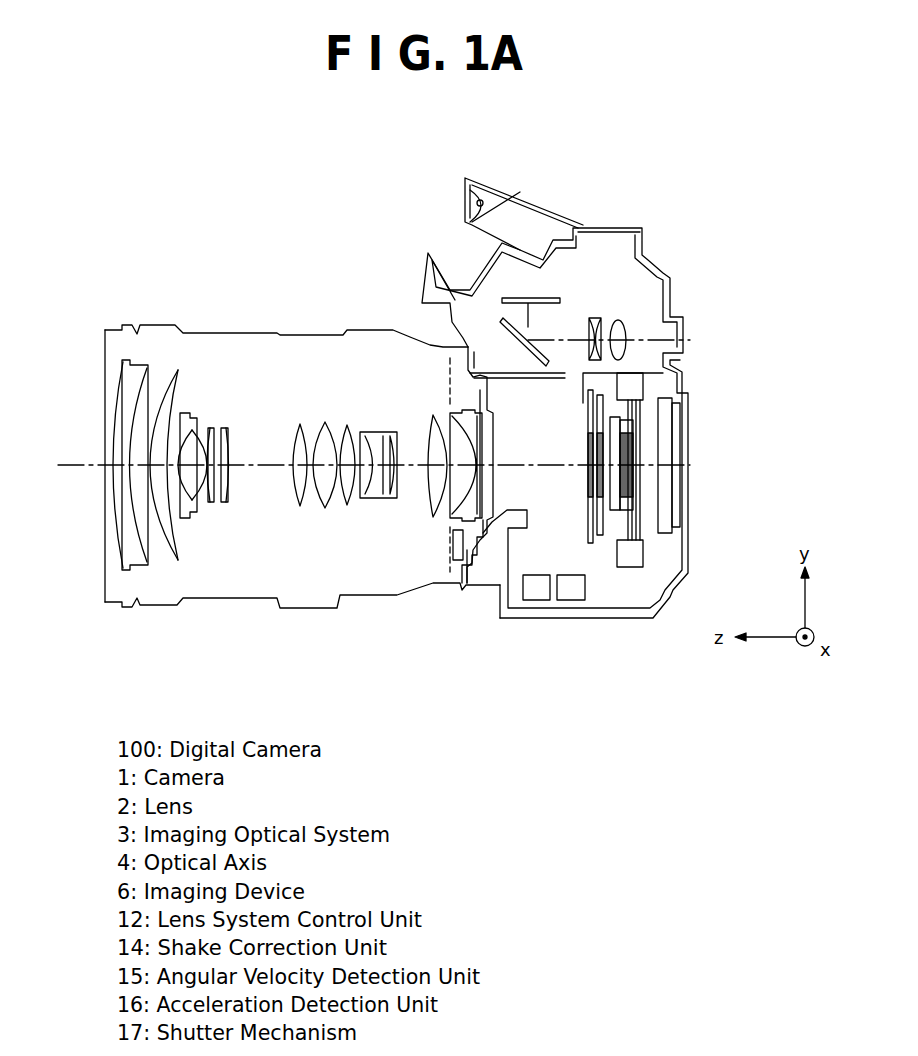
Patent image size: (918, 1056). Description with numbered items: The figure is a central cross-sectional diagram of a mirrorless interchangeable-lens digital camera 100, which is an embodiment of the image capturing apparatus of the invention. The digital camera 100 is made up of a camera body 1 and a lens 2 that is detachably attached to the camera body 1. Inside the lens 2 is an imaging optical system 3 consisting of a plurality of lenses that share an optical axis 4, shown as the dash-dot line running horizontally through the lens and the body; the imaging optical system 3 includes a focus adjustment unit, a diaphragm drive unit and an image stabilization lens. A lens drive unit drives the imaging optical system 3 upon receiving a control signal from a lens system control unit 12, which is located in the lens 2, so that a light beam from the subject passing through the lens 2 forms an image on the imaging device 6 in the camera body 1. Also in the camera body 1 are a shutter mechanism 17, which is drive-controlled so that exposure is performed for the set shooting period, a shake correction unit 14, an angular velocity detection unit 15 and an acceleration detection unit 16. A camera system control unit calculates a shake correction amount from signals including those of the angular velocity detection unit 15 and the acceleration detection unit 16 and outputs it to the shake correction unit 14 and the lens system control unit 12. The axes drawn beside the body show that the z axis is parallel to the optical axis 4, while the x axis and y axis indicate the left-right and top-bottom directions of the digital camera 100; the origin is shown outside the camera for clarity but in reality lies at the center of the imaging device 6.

The digital camera 100 is at (428, 180).
The camera body 1 is at (671, 270).
The lens 2 is at (240, 327).
The imaging optical system 3 is at (238, 572).
The optical axis 4 is at (66, 470).
The imaging device 6 is at (633, 487).
The lens system control unit 12 is at (445, 543).
The shake correction unit 14 is at (633, 567).
The angular velocity detection unit 15 is at (529, 600).
The acceleration detection unit 16 is at (568, 600).
The shutter mechanism 17 is at (600, 533).